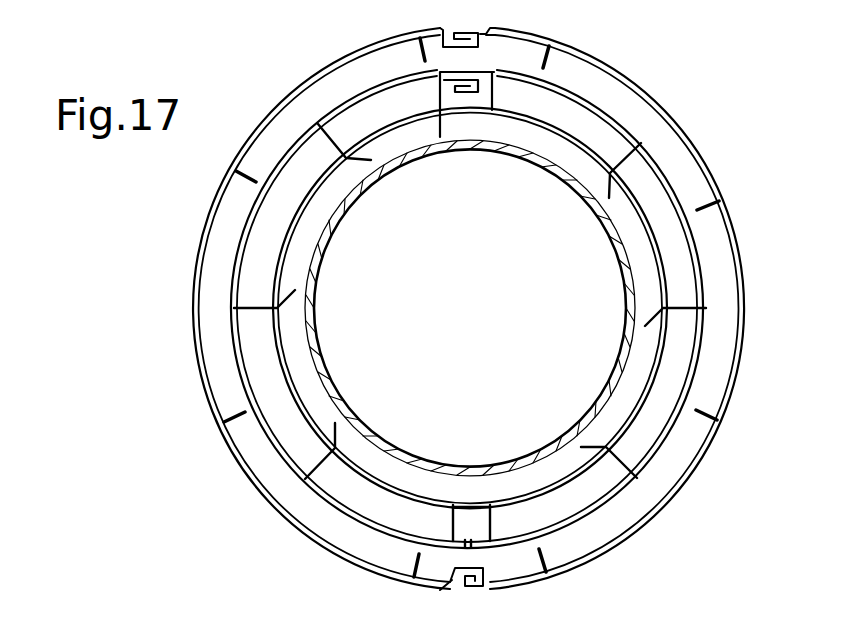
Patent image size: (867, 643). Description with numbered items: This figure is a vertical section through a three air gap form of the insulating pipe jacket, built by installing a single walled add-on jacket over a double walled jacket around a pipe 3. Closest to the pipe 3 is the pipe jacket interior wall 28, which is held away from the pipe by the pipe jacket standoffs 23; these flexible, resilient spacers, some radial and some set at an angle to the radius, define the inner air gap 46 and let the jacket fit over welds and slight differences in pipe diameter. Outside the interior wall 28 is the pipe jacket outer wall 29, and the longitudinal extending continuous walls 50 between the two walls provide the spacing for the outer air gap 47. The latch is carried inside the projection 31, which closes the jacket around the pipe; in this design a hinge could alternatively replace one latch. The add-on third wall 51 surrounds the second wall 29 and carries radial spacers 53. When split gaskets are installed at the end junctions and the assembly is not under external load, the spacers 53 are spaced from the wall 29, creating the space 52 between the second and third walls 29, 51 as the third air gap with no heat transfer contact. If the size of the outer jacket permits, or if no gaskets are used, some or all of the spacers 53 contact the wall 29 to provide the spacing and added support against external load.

The pipe 3 is at (556, 443).
The pipe jacket standoffs 23 is at (290, 310).
The pipe jacket interior wall 28 is at (660, 363).
The pipe jacket outer wall 29 is at (701, 250).
The projection 31 is at (478, 64).
The inner air gap 46 is at (637, 380).
The outer air gap 47 is at (688, 273).
The longitudinal extending continuous walls 50 is at (683, 310).
The third wall 51 is at (677, 113).
The space 52 is at (678, 160).
The spacers 53 is at (703, 214).